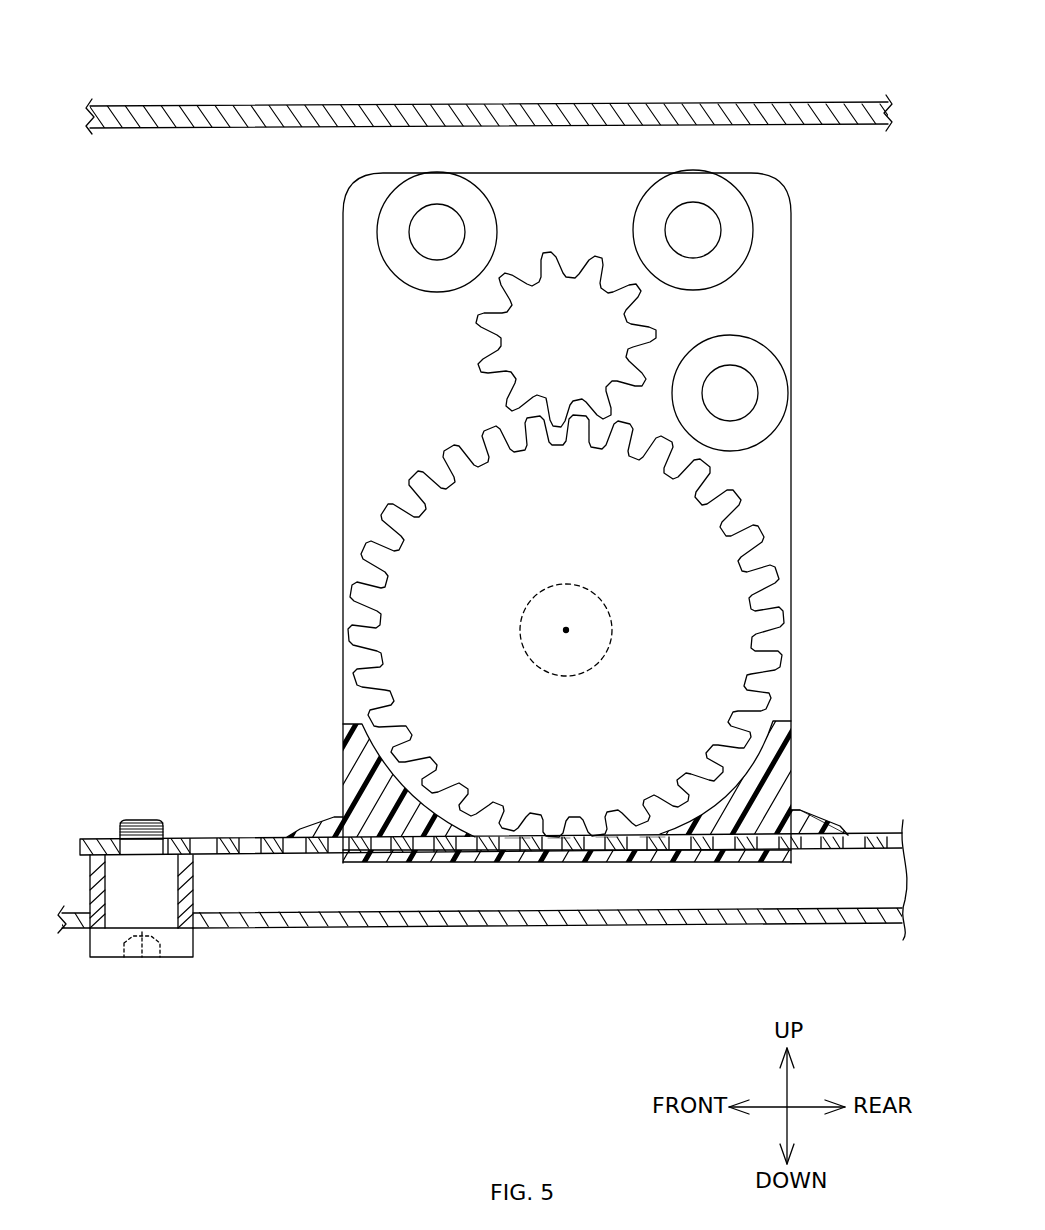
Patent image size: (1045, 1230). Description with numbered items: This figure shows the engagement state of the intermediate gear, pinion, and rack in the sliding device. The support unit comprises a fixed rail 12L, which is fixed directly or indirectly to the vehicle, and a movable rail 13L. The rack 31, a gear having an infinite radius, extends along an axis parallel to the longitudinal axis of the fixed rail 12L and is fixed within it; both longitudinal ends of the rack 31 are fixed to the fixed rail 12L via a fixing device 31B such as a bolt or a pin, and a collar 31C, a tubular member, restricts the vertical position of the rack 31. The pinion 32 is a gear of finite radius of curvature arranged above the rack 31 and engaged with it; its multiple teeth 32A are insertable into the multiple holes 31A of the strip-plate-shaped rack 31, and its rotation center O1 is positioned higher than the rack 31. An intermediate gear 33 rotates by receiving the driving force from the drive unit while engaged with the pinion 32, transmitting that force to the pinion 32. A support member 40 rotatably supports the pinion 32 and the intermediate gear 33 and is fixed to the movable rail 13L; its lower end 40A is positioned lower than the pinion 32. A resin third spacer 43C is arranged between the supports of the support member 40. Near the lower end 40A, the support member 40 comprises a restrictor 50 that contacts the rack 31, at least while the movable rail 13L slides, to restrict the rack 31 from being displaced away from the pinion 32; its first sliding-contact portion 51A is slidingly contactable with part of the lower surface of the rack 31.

The movable rail 13L is at (641, 101).
The fixed rail 12L is at (372, 928).
The rack 31 is at (234, 838).
The holes 31A is at (517, 855).
The fixing device 31B is at (155, 902).
The collar 31C is at (190, 886).
The pinion 32 is at (393, 508).
The teeth 32A is at (559, 853).
The intermediate gear 33 is at (478, 364).
The support member 40 is at (340, 246).
The lower end 40A is at (770, 850).
The third spacer 43C is at (392, 262).
The restrictor 50 is at (455, 866).
The sheet member portion 51A is at (721, 852).
The rotation center O1 is at (566, 630).